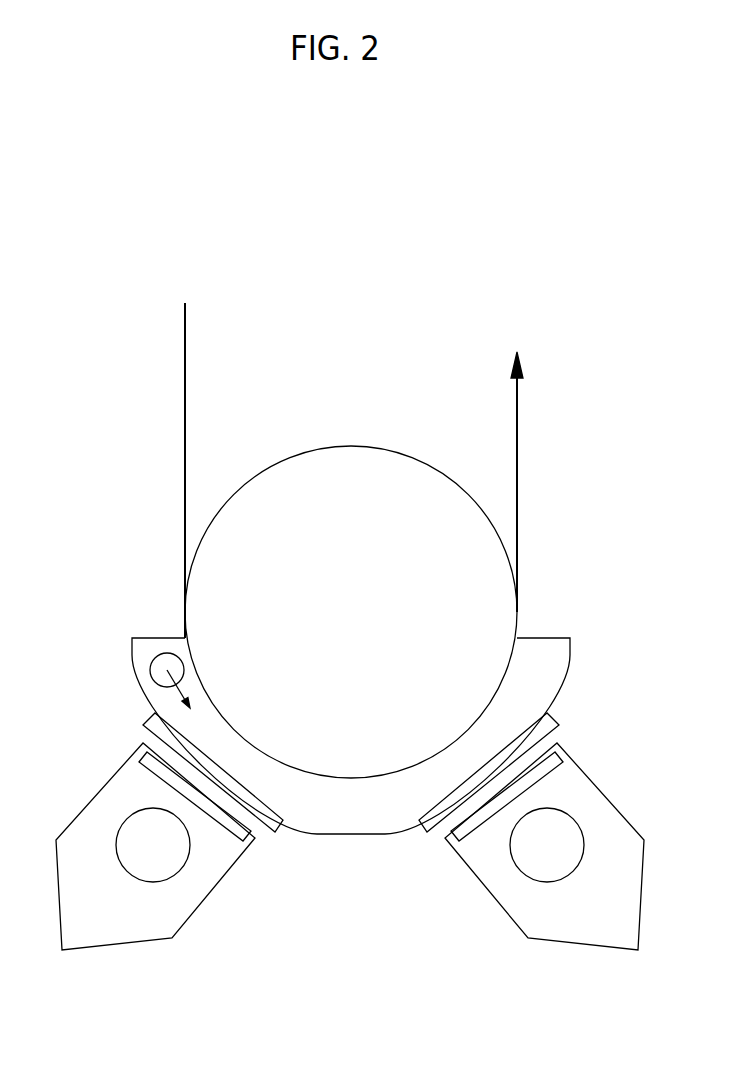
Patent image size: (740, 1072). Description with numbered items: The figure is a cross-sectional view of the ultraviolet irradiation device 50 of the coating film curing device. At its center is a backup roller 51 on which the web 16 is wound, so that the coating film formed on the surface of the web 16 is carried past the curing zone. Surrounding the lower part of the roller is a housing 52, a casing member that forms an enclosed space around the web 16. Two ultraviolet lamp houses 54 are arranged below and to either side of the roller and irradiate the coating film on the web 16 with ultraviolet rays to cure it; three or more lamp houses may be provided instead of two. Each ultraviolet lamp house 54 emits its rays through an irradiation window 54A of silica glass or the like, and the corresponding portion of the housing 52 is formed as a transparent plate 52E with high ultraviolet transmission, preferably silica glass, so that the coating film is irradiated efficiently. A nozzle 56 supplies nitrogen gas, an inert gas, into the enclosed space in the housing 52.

The web 16 is at (185, 328).
The ultraviolet irradiation device 50 is at (457, 306).
The backup roller 51 is at (352, 445).
The housing 52 is at (358, 836).
The transparent plate 52E is at (263, 834).
The ultraviolet lamp house 54 is at (104, 952).
The irradiation window 54A is at (214, 820).
The nozzle 56 is at (183, 668).